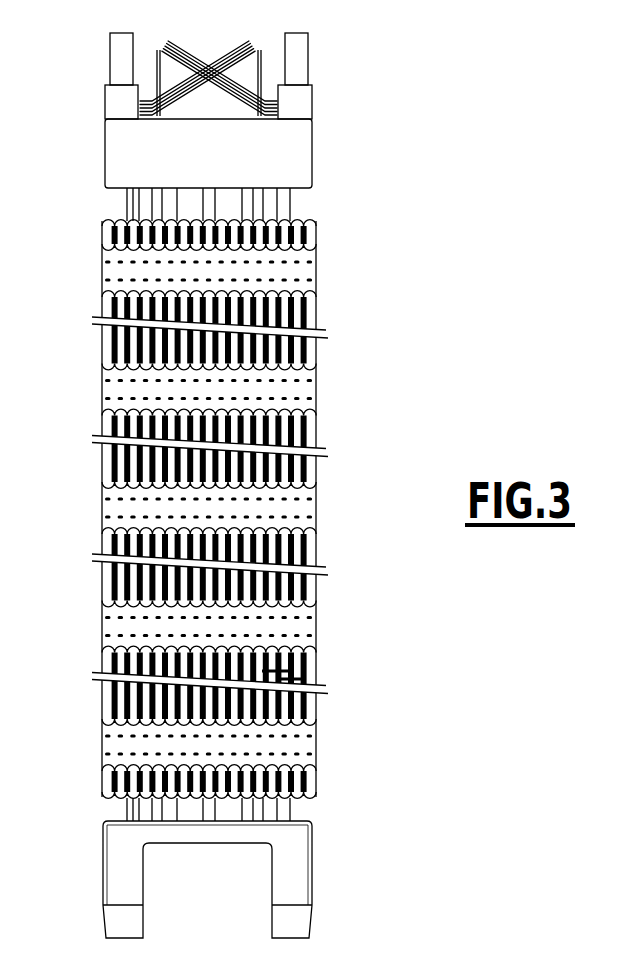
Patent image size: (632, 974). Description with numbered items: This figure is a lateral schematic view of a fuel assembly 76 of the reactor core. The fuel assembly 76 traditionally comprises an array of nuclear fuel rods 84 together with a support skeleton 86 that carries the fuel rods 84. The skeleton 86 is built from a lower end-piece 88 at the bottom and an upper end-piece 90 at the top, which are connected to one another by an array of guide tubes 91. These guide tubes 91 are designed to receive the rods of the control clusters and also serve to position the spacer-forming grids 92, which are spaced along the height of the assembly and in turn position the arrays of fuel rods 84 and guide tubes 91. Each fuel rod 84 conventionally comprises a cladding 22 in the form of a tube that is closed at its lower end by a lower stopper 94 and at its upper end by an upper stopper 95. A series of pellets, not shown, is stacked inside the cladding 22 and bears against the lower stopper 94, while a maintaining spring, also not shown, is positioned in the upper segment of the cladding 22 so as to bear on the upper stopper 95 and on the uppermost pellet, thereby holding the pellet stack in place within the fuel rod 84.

The cladding 22 is at (316, 553).
The fuel assembly 76 is at (225, 524).
The nuclear fuel rod 84 is at (295, 680).
The support skeleton 86 is at (323, 157).
The lower end-piece 88 is at (300, 917).
The upper end-piece 90 is at (116, 151).
The guide tube 91 is at (290, 207).
The spacer-forming grid 92 is at (103, 511).
The lower stopper 94 is at (308, 799).
The upper stopper 95 is at (304, 223).